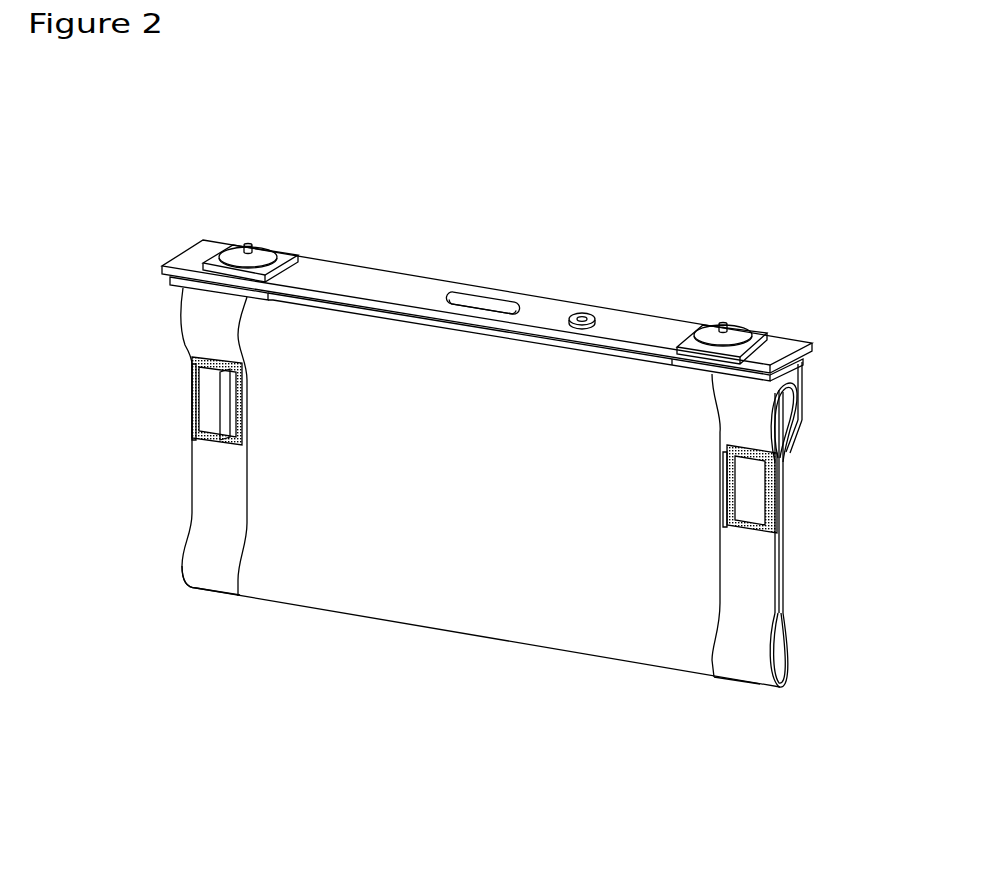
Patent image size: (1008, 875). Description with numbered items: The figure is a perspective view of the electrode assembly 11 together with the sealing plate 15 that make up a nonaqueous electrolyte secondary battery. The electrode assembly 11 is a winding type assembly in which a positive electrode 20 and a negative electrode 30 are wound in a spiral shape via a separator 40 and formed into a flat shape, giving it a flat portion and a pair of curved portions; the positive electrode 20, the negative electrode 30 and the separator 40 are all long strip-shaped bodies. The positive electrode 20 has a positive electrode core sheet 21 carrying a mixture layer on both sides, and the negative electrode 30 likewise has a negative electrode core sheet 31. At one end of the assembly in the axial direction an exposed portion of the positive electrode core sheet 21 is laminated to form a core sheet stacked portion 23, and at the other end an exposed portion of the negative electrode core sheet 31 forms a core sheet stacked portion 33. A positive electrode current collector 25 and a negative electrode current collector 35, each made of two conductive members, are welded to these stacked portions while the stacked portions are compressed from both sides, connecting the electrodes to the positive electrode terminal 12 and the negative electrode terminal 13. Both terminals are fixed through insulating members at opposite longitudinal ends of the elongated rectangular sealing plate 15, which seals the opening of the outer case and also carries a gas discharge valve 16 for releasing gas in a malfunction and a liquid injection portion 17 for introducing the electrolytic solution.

The electrode assembly 11 is at (177, 305).
The positive electrode terminal 12 is at (723, 328).
The negative electrode terminal 13 is at (249, 248).
The sealing plate 15 is at (398, 287).
The gas discharge valve 16 is at (483, 304).
The liquid injection portion 17 is at (582, 318).
The positive electrode 20 is at (793, 648).
The positive electrode core sheet 21 is at (742, 683).
The core sheet stacked portion 23 is at (770, 577).
The positive electrode current collector 25 is at (790, 482).
The negative electrode 30 is at (178, 557).
The negative electrode core sheet 31 is at (216, 595).
The core sheet stacked portion 33 is at (198, 488).
The negative electrode current collector 35 is at (207, 403).
The separator 40 is at (441, 612).